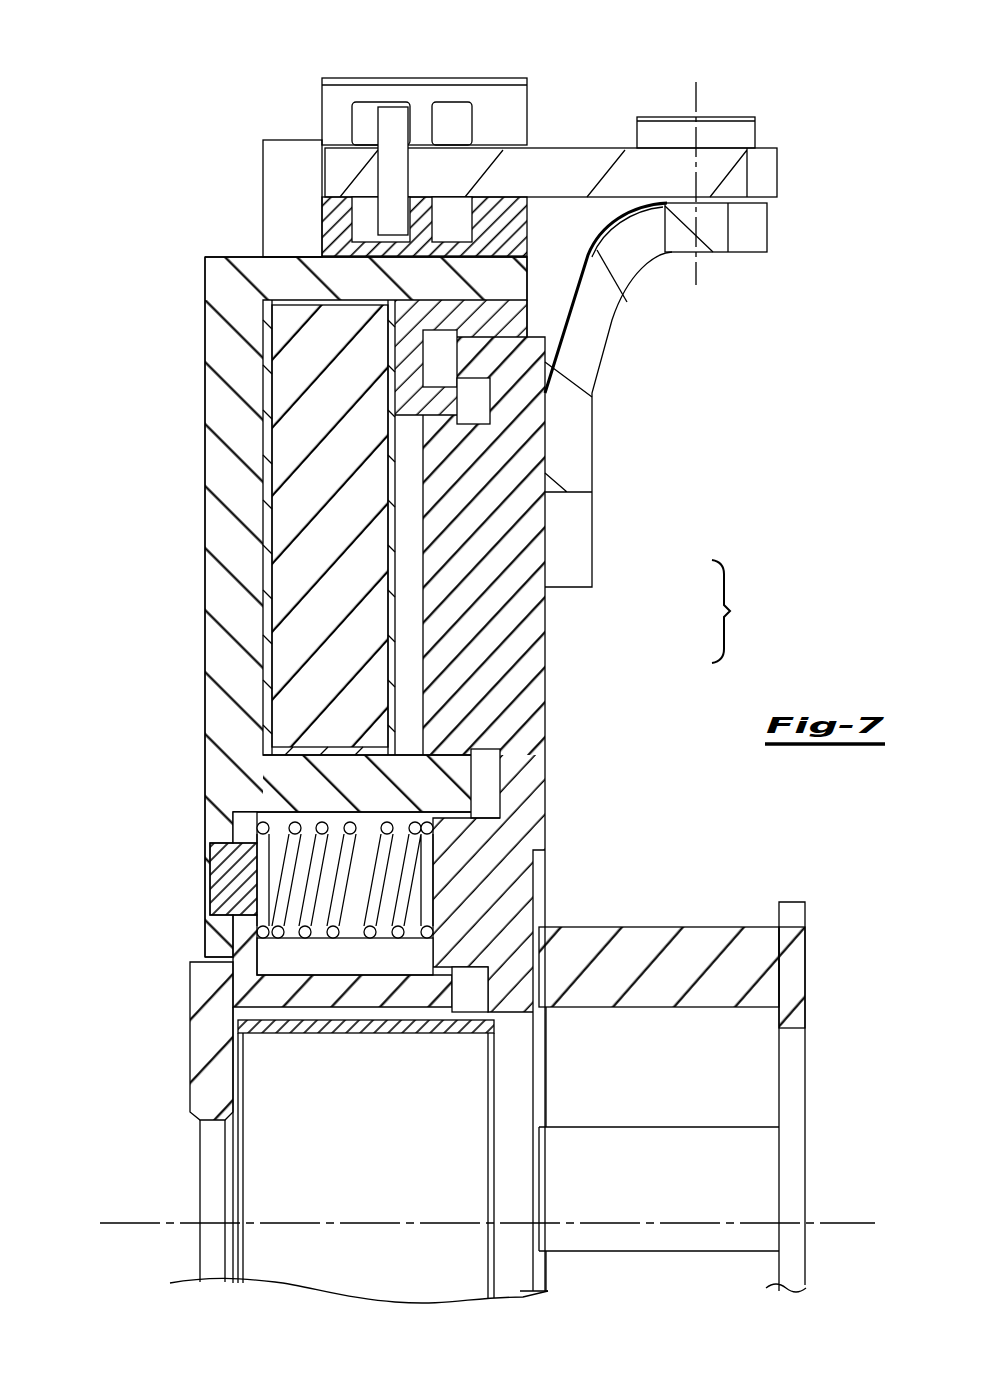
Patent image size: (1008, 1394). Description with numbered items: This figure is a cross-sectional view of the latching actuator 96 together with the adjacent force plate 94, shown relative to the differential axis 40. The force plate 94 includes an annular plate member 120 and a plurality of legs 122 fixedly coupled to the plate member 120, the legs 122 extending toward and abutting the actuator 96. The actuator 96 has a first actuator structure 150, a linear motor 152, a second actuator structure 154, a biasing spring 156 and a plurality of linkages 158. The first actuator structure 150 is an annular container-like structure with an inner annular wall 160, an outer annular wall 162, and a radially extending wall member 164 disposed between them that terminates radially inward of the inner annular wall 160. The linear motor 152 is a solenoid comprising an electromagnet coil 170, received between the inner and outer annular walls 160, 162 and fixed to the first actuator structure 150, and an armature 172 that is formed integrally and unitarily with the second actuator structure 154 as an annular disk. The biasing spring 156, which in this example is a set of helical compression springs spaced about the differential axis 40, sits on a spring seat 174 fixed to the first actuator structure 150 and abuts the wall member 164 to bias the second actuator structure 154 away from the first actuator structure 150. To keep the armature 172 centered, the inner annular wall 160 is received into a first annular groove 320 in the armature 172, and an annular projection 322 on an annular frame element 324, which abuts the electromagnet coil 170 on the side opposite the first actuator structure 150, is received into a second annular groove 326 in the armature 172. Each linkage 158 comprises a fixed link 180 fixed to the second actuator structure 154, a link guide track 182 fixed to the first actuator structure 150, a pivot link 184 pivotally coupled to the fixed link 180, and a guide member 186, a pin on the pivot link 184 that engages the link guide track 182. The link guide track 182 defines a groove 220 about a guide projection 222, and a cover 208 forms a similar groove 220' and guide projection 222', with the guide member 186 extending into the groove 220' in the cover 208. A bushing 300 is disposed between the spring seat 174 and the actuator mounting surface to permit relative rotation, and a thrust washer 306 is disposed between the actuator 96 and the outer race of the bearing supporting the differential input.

The differential axis 40 is at (145, 1223).
The force plate 94 is at (728, 898).
The actuator 96 is at (157, 348).
The annular plate member 120 is at (796, 920).
The legs 122 is at (650, 990).
The first actuator structure 150 is at (225, 537).
The linear motor 152 is at (738, 611).
The second actuator structure 154 is at (487, 892).
The biasing spring 156 is at (290, 838).
The linkages 158 is at (645, 88).
The inner annular wall 160 is at (423, 778).
The outer annular wall 162 is at (497, 273).
The radially extending wall member 164 is at (220, 602).
The electromagnet coil 170 is at (357, 640).
The armature 172 is at (482, 607).
The spring seat 174 is at (287, 997).
The fixed link 180 is at (583, 343).
The link guide track 182 is at (340, 217).
The pivot link 184 is at (568, 163).
The guide member 186 is at (390, 175).
The cover 208 is at (488, 90).
The groove 220 is at (592, 259).
The groove 220' is at (316, 102).
The guide projection 222 is at (432, 211).
The guide projection 222' is at (426, 77).
The bushing 300 is at (398, 1028).
The thrust washer 306 is at (208, 1048).
The first annular groove 320 is at (485, 797).
The annular projection 322 is at (430, 407).
The annular frame element 324 is at (468, 317).
The second annular groove 326 is at (468, 407).